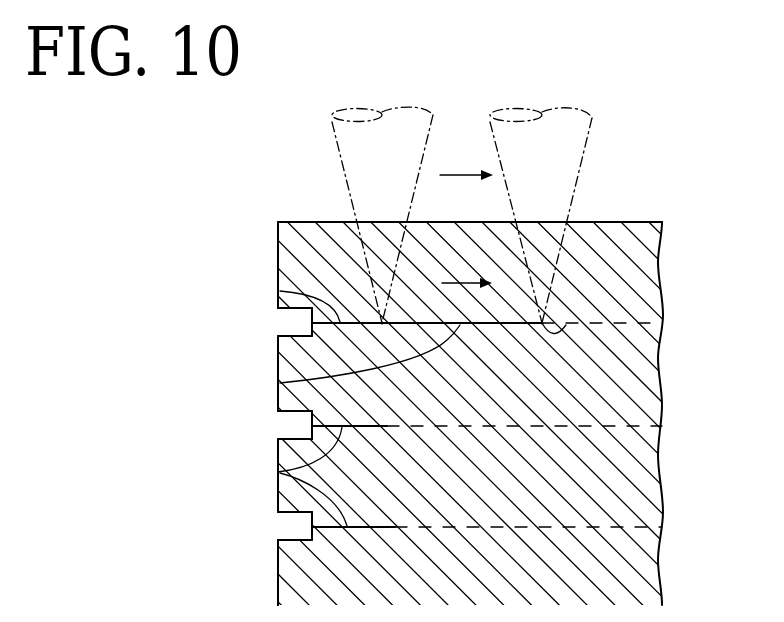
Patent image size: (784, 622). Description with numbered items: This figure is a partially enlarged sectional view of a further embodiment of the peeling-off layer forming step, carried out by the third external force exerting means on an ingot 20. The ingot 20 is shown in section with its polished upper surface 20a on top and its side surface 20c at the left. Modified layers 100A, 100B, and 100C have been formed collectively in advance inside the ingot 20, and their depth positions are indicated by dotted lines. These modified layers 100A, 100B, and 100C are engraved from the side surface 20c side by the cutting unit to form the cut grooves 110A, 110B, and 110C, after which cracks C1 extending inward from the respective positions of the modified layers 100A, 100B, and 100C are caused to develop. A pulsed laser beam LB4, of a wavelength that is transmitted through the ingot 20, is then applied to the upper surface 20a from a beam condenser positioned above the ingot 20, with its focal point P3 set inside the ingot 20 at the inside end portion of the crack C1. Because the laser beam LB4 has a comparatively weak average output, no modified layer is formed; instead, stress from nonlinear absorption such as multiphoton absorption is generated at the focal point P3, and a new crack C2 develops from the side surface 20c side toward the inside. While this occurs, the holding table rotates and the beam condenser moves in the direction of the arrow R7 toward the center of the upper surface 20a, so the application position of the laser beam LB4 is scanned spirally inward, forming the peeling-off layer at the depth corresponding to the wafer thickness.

The ingot 20 is at (268, 240).
The upper surface 20a is at (303, 220).
The side surface 20c is at (278, 583).
The cut groove 110A is at (308, 331).
The cut groove 110B is at (308, 433).
The cut groove 110C is at (308, 534).
The modified layer 100A is at (642, 324).
The modified layer 100B is at (641, 426).
The modified layer 100C is at (641, 528).
The laser beam LB4 is at (357, 162).
The arrow R7 is at (465, 172).
The focal point P3 is at (382, 323).
The crack C1 is at (280, 291).
The crack C2 is at (280, 383).